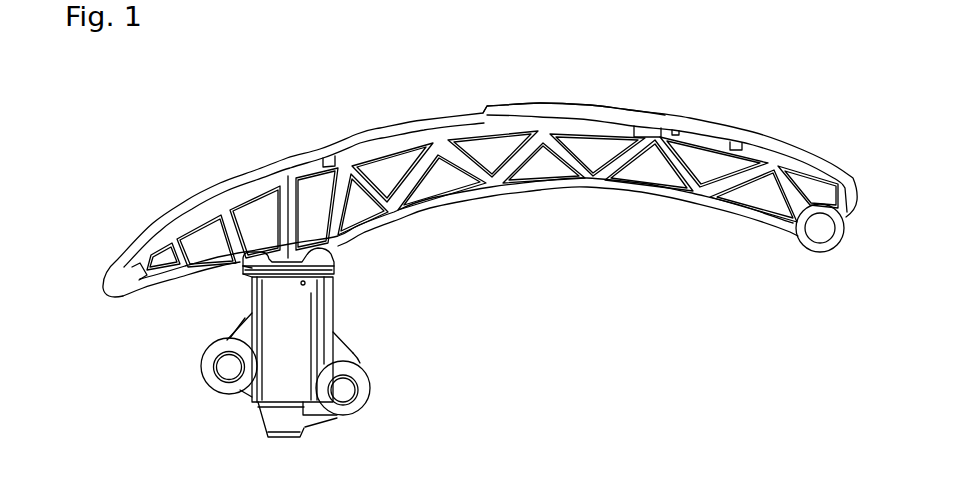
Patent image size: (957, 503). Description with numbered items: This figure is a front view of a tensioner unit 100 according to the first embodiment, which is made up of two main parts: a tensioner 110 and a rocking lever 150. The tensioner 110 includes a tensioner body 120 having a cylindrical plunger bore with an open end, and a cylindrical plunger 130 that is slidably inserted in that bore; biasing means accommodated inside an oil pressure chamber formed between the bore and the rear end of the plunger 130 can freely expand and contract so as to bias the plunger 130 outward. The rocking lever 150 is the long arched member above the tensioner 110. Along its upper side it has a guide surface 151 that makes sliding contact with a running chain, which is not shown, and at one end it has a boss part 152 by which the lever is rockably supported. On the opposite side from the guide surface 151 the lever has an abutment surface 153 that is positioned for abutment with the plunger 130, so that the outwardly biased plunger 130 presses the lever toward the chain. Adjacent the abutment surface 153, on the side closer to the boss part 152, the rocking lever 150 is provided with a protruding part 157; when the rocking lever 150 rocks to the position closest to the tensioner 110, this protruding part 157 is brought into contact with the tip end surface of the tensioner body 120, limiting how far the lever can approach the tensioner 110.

The tensioner unit 100 is at (168, 162).
The tensioner 110 is at (352, 352).
The tensioner body 120 is at (323, 303).
The plunger 130 is at (247, 272).
The rocking lever 150 is at (352, 136).
The guide surface 151 is at (449, 115).
The boss part 152 is at (803, 242).
The abutment surface 153 is at (263, 255).
The protruding part 157 is at (337, 268).